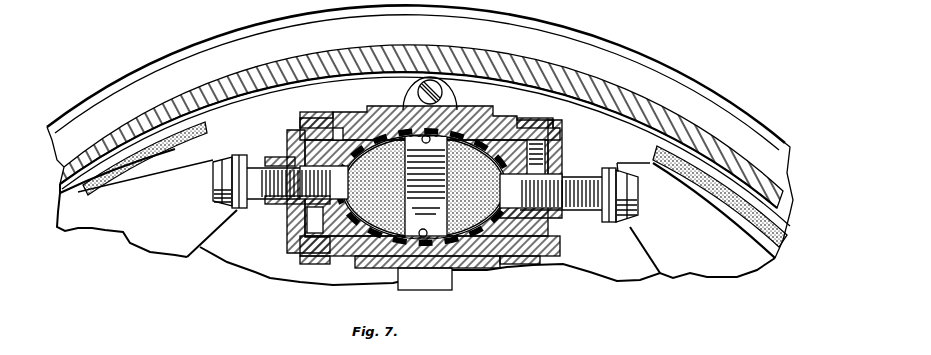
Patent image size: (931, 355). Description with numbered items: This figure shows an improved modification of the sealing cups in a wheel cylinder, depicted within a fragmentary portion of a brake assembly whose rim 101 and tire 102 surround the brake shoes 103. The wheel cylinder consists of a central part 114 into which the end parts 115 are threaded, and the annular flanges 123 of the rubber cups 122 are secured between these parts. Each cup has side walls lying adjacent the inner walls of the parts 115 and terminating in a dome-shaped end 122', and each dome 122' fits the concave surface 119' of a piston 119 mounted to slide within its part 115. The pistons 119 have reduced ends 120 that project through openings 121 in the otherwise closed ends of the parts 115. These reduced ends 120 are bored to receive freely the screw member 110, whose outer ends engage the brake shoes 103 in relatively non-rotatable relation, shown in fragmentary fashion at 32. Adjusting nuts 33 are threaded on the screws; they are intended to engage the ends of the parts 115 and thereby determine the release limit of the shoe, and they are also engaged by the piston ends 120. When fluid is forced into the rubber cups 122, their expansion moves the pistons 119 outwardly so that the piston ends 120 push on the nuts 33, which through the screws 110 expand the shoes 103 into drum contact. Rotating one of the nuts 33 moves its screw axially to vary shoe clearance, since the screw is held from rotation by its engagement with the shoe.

The tire 101 is at (662, 112).
The rim 102 is at (485, 103).
The brake shoes 103 is at (143, 230).
The fragmentary shoe engagement 32 is at (213, 194).
The adjusting nuts 33 is at (297, 120).
The screw member 110 is at (282, 163).
The wheel cylinder part 114 is at (460, 110).
The wheel cylinder parts 115 is at (350, 113).
The pistons 119 is at (406, 215).
The concave surfaces 119' is at (548, 163).
The reduced ends 120 is at (400, 190).
The openings 121 is at (290, 221).
The rubber cups 122 is at (426, 188).
The dome-shaped ends 122' is at (419, 183).
The annular flanges 123 is at (386, 262).